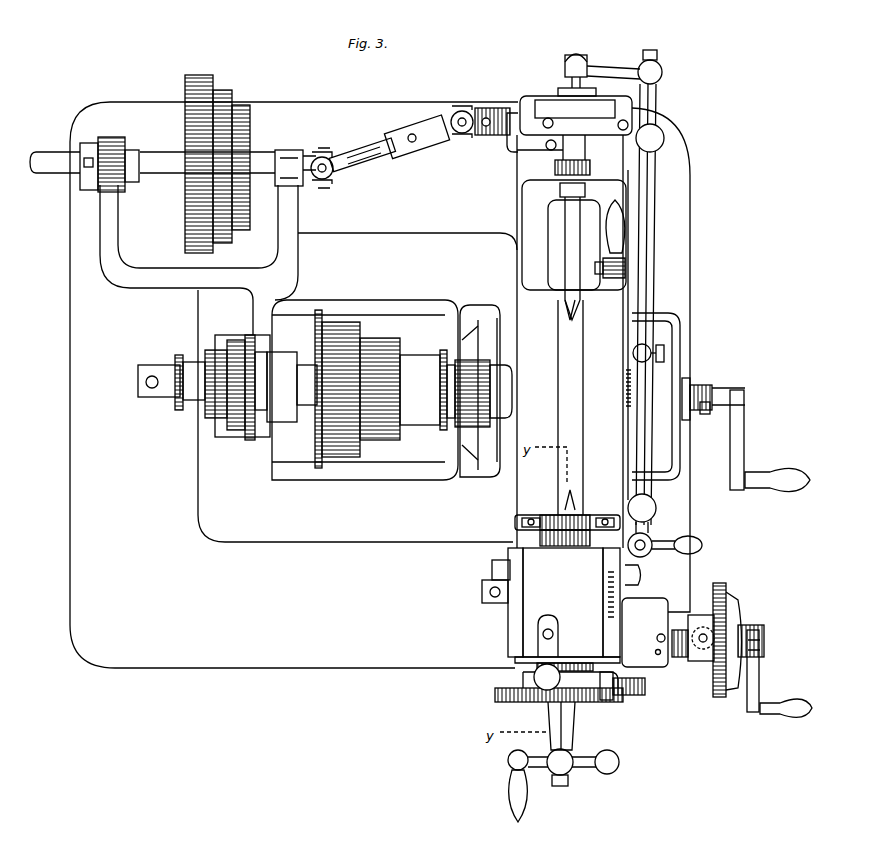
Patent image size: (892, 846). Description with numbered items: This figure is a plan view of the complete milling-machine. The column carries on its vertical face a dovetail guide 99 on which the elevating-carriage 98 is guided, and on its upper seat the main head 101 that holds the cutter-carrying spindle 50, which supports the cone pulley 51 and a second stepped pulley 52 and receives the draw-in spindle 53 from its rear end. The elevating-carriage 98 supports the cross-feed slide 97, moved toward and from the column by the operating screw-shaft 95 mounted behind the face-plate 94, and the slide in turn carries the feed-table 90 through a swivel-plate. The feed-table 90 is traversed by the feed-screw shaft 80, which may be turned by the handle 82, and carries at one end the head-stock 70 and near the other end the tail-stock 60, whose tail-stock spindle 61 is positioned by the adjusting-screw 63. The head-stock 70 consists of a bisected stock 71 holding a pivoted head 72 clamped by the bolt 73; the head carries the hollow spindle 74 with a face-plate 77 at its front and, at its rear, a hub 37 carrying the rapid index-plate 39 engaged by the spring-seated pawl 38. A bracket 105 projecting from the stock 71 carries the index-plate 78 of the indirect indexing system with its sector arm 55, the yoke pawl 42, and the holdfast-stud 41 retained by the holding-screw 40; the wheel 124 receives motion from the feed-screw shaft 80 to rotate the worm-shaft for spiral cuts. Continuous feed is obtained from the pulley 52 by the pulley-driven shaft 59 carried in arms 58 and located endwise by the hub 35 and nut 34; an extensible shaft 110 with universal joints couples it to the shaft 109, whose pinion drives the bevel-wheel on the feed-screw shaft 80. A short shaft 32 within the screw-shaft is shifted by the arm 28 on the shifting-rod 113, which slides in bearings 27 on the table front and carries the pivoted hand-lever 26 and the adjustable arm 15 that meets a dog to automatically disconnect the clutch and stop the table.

The adjustable arm 15 is at (633, 354).
The pivoted hand-lever 26 is at (670, 553).
The bearings 27 is at (646, 323).
The arm 28 is at (612, 67).
The short shaft 32 is at (568, 82).
The nut 34 is at (128, 148).
The hub 35 is at (88, 190).
The hub 37 is at (559, 679).
The spring-seated pawl 38 is at (548, 706).
The index-plate 39 is at (580, 705).
The holding-screw 40 is at (654, 653).
The holdfast-stud 41 is at (660, 636).
The pawl 42 is at (701, 638).
The spindle 50 is at (505, 380).
The cone pulley 51 is at (385, 389).
The second stepped pulley 52 is at (261, 387).
The draw-in spindle 53 is at (160, 368).
The sector arm 55 is at (732, 610).
The arms 58 is at (199, 260).
The pulley-driven shaft 59 is at (160, 158).
The tail-stock 60 is at (586, 236).
The tail-stock spindle 61 is at (573, 258).
The adjusting-screw 63 is at (572, 160).
The head-stock 70 is at (563, 602).
The bisected stock 71 is at (552, 602).
The pivoted head 72 is at (563, 633).
The bolt 73 is at (639, 578).
The hollow spindle 74 is at (566, 540).
The face-plate 77 is at (588, 518).
The index-plate 78 is at (714, 606).
The feed-screw shaft 80 is at (560, 780).
The handle 82 is at (508, 760).
The feed-table 90 is at (569, 322).
The face-plate 94 is at (688, 382).
The operating screw-shaft 95 is at (706, 412).
The cross-feed slide 97 is at (668, 316).
The elevating-carriage 98 is at (480, 391).
The dovetail guide 99 is at (471, 393).
The main head 101 is at (365, 390).
The bracket 105 is at (642, 603).
The shaft 109 is at (470, 112).
The extensible shaft 110 is at (366, 135).
The shifting-rod 113 is at (659, 287).
The wheel 124 is at (646, 686).